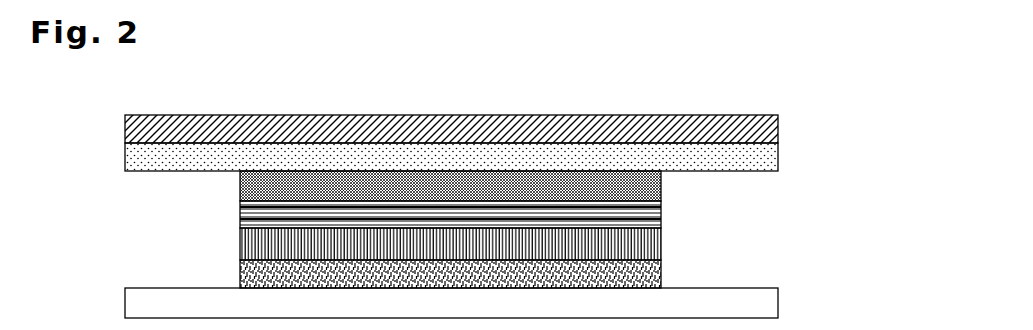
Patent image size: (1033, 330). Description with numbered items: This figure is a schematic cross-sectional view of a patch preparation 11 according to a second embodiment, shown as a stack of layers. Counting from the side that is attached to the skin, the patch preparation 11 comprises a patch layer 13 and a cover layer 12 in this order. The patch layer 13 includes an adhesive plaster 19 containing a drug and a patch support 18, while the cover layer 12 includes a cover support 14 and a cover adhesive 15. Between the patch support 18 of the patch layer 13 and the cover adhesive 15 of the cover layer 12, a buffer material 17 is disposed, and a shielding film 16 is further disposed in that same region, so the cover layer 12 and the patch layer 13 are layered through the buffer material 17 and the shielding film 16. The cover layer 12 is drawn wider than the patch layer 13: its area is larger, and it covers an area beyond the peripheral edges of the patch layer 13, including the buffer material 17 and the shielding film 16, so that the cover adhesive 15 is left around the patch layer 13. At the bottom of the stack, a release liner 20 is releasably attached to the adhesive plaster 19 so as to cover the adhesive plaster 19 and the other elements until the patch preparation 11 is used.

The patch preparation 11 is at (675, 107).
The cover layer 12 is at (863, 127).
The patch layer 13 is at (803, 245).
The cover support 14 is at (776, 131).
The cover adhesive 15 is at (768, 157).
The shielding film 16 is at (661, 187).
The buffer material 17 is at (661, 215).
The patch support 18 is at (661, 245).
The adhesive plaster 19 is at (661, 278).
The release liner 20 is at (760, 307).